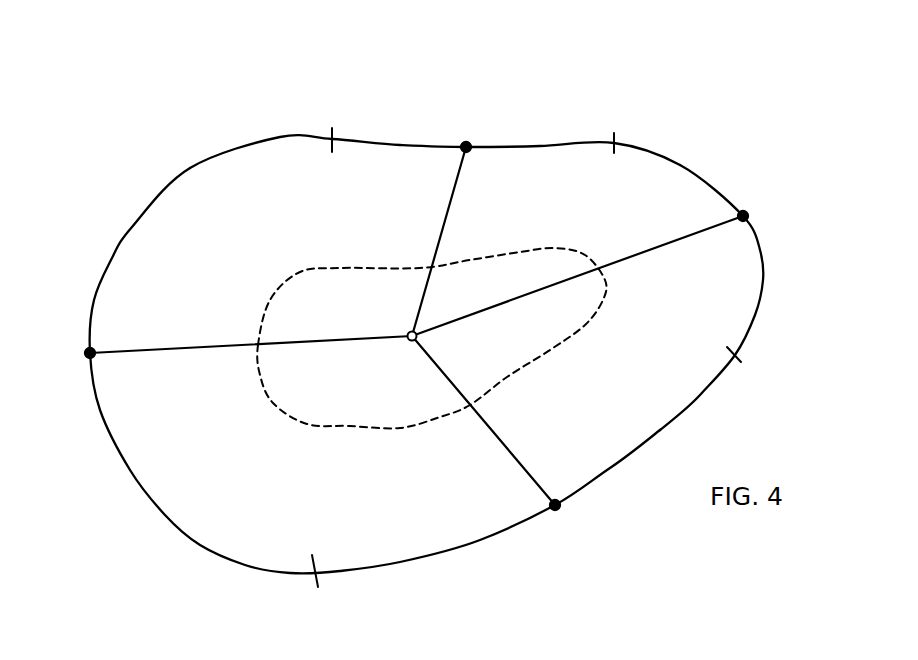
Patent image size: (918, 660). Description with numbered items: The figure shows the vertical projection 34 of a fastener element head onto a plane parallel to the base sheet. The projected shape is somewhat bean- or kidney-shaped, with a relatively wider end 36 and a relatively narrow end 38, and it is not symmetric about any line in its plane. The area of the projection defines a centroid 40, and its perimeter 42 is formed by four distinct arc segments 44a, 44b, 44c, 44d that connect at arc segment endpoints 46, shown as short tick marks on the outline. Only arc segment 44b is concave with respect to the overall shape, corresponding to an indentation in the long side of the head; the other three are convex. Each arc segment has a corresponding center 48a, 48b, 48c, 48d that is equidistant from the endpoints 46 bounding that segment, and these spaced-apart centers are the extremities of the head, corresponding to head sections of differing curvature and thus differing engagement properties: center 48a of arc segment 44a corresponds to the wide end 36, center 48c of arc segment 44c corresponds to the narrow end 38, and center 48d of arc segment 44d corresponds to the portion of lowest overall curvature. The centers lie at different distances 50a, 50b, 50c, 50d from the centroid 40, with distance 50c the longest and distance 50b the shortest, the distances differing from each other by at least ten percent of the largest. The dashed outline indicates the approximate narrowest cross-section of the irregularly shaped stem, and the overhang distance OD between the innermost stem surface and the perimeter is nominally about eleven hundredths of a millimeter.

The vertical projection of the head 34 is at (720, 100).
The wider end 36 is at (62, 310).
The narrow end 38 is at (793, 252).
The centroid 40 is at (420, 338).
The perimeter 42 is at (280, 136).
The arc segment 44a is at (132, 227).
The arc segment 44b is at (383, 148).
The arc segment 44c is at (755, 315).
The arc segment 44d is at (355, 565).
The arc segment endpoints 46 is at (337, 138).
The arc segment center 48a is at (84, 352).
The arc segment center 48b is at (463, 140).
The arc segment center 48c is at (744, 210).
The arc segment center 48d is at (562, 510).
The distance 50a is at (173, 353).
The distance 50b is at (445, 222).
The distance 50c is at (637, 253).
The distance 50d is at (500, 435).
The overhang distance OD is at (285, 412).